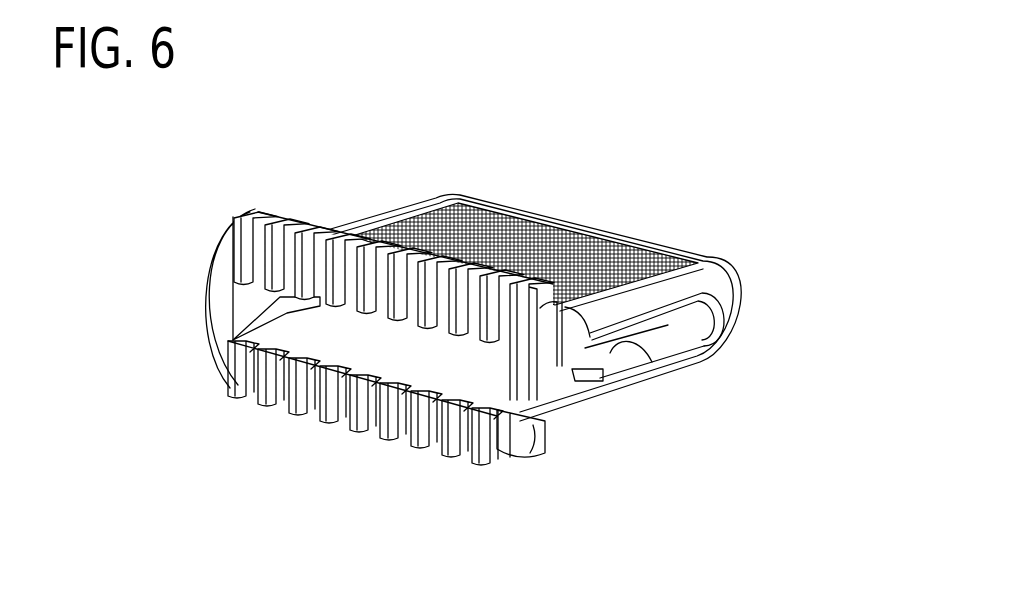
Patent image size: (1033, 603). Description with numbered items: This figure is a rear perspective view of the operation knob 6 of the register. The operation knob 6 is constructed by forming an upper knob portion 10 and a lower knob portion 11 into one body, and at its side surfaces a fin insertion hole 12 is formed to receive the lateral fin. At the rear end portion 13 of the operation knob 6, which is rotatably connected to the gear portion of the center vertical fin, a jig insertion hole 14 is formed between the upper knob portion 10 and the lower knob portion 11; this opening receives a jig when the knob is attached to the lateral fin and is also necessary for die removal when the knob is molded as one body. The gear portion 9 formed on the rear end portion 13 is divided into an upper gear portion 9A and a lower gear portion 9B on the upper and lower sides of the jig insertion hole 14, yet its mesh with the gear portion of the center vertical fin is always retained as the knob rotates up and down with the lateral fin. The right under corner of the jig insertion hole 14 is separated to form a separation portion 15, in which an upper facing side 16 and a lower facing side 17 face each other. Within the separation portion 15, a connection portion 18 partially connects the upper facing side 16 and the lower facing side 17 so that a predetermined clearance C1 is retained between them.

The operation knob 6 is at (616, 163).
The gear portion 9 is at (290, 483).
The upper gear portion 9A is at (304, 281).
The lower gear portion 9B is at (294, 397).
The upper knob portion 10 is at (468, 232).
The lower knob portion 11 is at (697, 366).
The fin insertion hole 12 is at (613, 346).
The rear end portion 13 is at (222, 285).
The jig insertion hole 14 is at (428, 358).
The separation portion 15 is at (573, 423).
The upper facing side 16 is at (558, 305).
The lower facing side 17 is at (548, 422).
The connection portion 18 is at (510, 424).
The clearance C1 is at (595, 366).